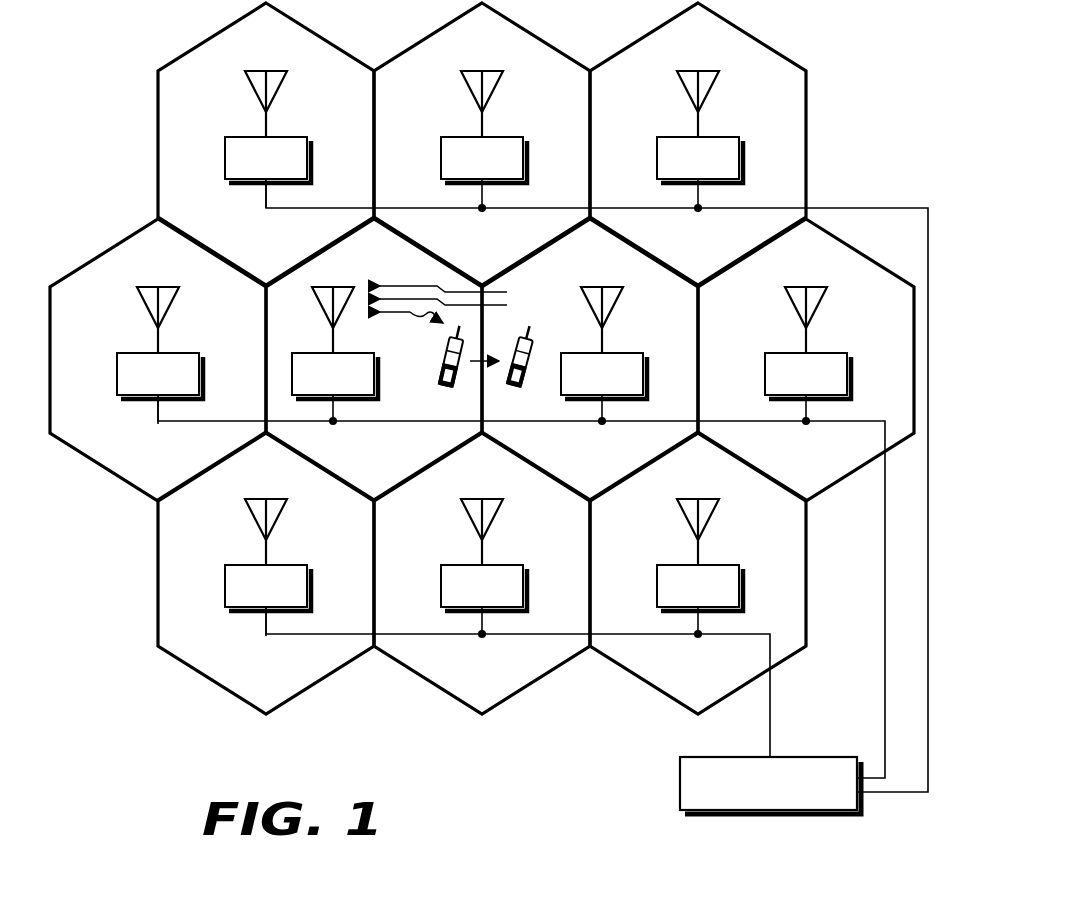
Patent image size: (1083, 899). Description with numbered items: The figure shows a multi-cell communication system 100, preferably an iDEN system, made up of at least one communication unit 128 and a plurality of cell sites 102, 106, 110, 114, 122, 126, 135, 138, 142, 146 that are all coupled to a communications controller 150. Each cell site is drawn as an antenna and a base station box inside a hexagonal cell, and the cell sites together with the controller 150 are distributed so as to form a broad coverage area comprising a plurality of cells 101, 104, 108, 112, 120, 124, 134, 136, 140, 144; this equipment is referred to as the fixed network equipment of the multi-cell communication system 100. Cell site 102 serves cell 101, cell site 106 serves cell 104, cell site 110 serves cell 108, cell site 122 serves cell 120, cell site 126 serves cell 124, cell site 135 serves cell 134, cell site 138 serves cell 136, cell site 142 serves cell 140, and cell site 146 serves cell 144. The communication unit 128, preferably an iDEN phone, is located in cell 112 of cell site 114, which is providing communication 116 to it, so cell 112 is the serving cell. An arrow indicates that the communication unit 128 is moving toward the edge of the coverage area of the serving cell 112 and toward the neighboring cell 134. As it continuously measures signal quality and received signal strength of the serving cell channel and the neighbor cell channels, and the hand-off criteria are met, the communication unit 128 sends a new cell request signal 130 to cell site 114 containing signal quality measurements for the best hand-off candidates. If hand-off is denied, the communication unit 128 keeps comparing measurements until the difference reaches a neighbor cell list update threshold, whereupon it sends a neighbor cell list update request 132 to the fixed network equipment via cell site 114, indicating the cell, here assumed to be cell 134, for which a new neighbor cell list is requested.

The multi-cell communication system 100 is at (498, 814).
The cell 101 is at (113, 326).
The cell site 102 is at (185, 354).
The cell 104 is at (266, 118).
The cell site 106 is at (293, 137).
The cell 108 is at (221, 541).
The cell site 110 is at (293, 566).
The serving cell 112 is at (396, 467).
The cell site 114 is at (313, 353).
The communication 116 is at (422, 329).
The cell 120 is at (438, 112).
The cell site 122 is at (509, 137).
The cell 124 is at (438, 541).
The cell site 126 is at (509, 566).
The communication unit 128 is at (448, 383).
The new cell request signal 130 is at (507, 293).
The neighbor cell list update request 132 is at (504, 306).
The cell 134 is at (611, 470).
The cell site 135 is at (628, 354).
The cell 136 is at (653, 114).
The cell site 138 is at (725, 140).
The cell 140 is at (653, 541).
The cell site 142 is at (725, 566).
The cell 144 is at (760, 331).
The cell site 146 is at (832, 354).
The communications controller 150 is at (680, 787).